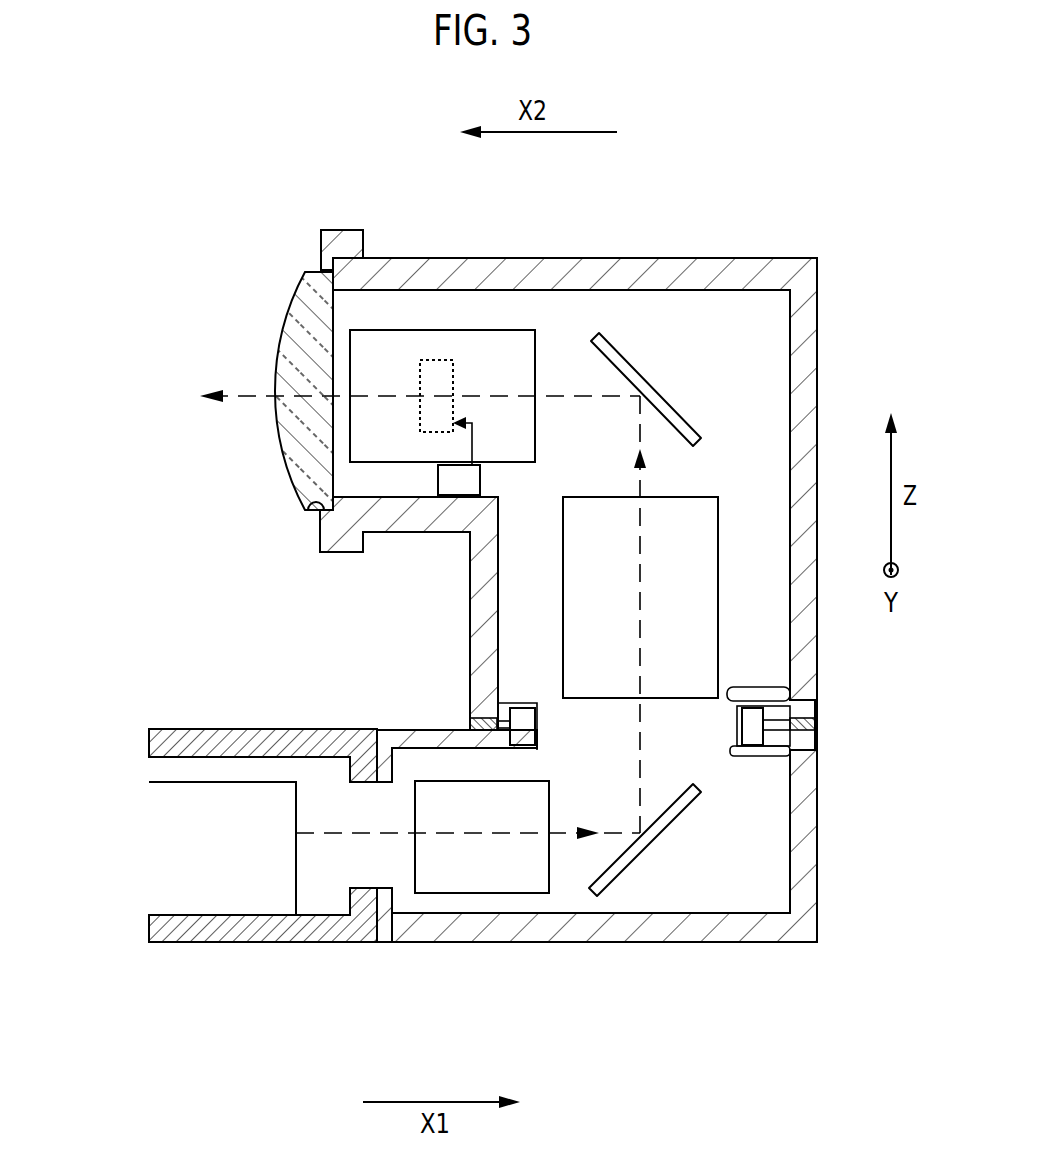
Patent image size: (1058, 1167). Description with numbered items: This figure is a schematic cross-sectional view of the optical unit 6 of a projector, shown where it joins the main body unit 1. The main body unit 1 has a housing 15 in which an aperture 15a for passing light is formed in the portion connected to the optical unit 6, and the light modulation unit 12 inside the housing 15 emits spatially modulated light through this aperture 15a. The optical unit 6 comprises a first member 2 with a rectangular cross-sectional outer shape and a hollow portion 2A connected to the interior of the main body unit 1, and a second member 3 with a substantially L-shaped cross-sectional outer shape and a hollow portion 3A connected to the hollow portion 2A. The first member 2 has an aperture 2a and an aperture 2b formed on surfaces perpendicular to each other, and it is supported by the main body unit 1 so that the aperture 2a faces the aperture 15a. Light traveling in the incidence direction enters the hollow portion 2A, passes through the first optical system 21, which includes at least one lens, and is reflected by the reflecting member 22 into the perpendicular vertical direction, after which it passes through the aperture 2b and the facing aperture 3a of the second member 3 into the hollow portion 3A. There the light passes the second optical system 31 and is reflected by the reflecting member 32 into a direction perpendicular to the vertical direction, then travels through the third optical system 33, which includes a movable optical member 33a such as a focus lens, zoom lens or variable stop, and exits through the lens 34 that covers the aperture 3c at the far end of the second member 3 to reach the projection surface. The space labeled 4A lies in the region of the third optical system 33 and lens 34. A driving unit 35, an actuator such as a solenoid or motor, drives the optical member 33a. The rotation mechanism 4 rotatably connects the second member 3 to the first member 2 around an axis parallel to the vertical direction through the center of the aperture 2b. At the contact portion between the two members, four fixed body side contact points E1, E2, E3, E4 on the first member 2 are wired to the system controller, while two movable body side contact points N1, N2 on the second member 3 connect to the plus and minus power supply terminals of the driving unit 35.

The main body unit 1 is at (227, 865).
The first member 2 is at (808, 932).
The aperture 2a is at (400, 890).
The aperture 2b is at (750, 742).
The hollow portion 2A is at (779, 902).
The second member 3 is at (808, 406).
The aperture 3a is at (788, 689).
The aperture 3c is at (307, 512).
The hollow portion 3A is at (779, 659).
The rotation mechanism 4 is at (510, 710).
The third internal space 4A is at (384, 324).
The optical unit 6 is at (836, 250).
The light modulation unit 12 is at (160, 833).
The housing 15 is at (305, 942).
The aperture 15a is at (357, 780).
The first optical system 21 is at (442, 877).
The reflecting member 22 is at (596, 897).
The second optical system 31 is at (700, 525).
The reflecting member 32 is at (594, 337).
The third optical system 33 is at (443, 330).
The optical member 33a is at (437, 433).
The lens 34 is at (297, 452).
The driving unit 35 is at (468, 495).
The movable body side contact point N1 is at (470, 720).
The movable body side contact point N2 is at (818, 718).
The fixed body side contact point E1 is at (380, 691).
The fixed body side contact point E2 is at (841, 734).
The fixed body side contact point E3 is at (818, 728).
The fixed body side contact point E4 is at (468, 727).